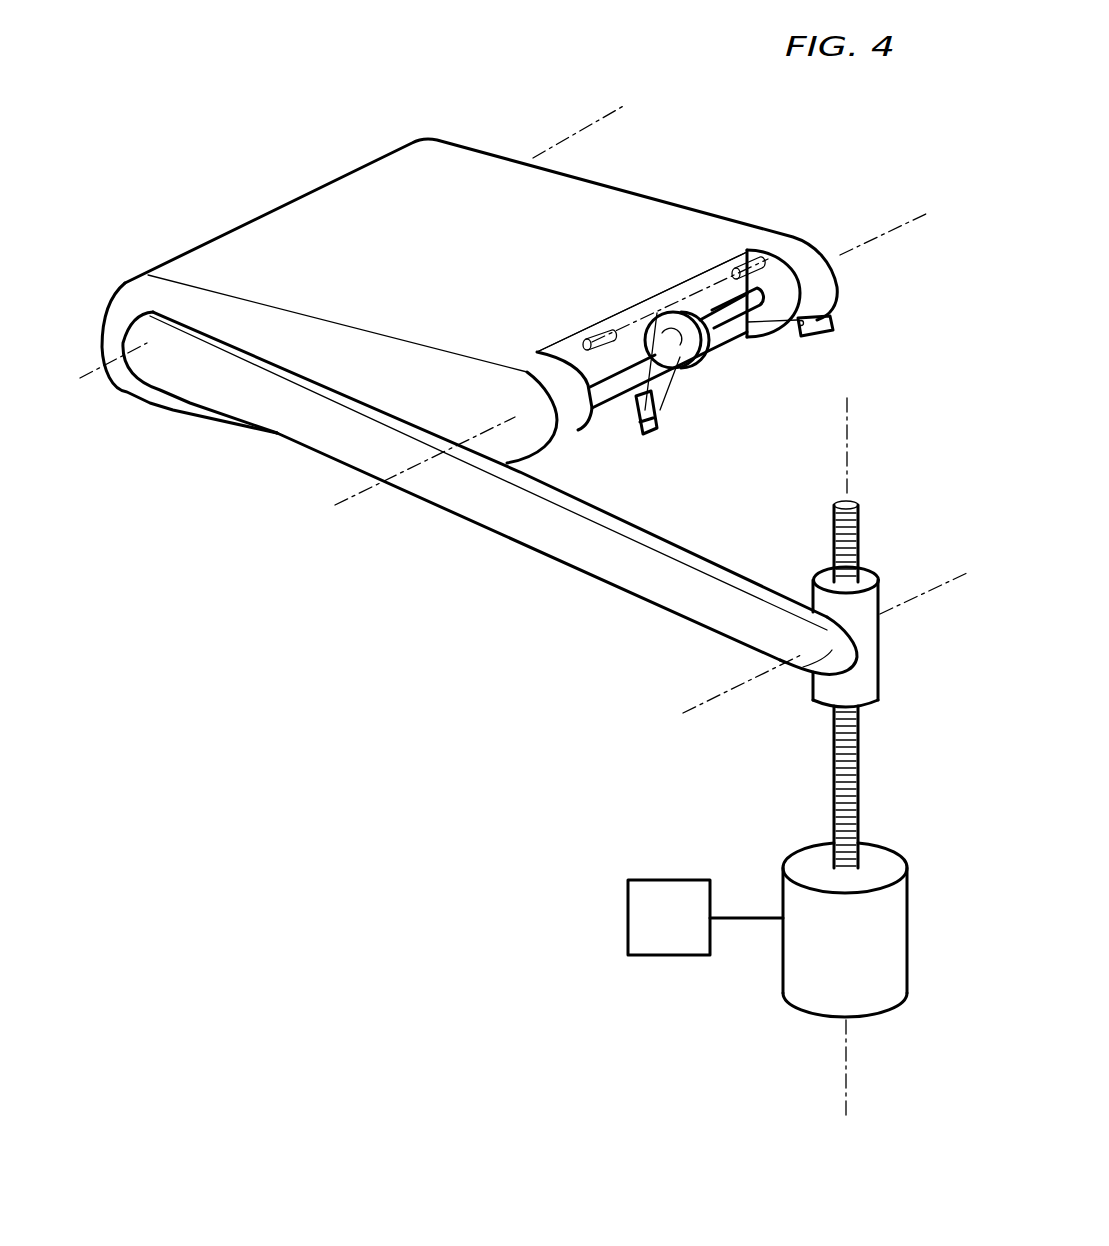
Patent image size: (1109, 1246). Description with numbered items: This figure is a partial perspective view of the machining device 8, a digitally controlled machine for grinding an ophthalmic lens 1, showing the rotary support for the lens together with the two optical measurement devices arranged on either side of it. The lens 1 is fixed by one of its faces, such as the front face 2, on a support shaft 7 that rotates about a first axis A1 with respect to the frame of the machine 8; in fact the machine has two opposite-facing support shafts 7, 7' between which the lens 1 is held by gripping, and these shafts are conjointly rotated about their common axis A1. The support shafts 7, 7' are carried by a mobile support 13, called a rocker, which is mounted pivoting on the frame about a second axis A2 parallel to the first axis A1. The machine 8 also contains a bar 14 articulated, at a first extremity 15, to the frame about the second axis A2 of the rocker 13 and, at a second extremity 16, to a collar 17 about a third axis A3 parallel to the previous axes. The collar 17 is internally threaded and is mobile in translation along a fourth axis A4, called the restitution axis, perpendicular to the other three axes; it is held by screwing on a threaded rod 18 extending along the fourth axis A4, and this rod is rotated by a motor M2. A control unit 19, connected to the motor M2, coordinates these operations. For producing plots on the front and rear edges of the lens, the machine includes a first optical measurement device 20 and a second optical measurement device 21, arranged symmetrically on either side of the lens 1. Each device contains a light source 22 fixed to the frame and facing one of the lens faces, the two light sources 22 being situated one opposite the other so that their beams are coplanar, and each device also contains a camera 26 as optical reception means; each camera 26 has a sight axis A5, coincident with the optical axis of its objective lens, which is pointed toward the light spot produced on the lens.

The ophthalmic lens 1 is at (700, 362).
The front face 2 is at (668, 368).
The support shaft 7 is at (668, 379).
The support shaft 7' is at (754, 308).
The machining device 8 is at (703, 165).
The mobile support 13 is at (285, 215).
The bar 14 is at (500, 512).
The first extremity 15 is at (112, 352).
The second extremity 16 is at (805, 670).
The collar 17 is at (868, 598).
The threaded rod 18 is at (836, 542).
The control unit 19 is at (678, 931).
The first optical measurement device 20 is at (597, 334).
The second optical measurement device 21 is at (709, 269).
The light source 22 is at (742, 273).
The camera 26 is at (634, 420).
The first axis A1 is at (888, 234).
The second axis A2 is at (590, 127).
The third axis A3 is at (712, 700).
The fourth axis A4 is at (850, 440).
The sight axis A5 is at (766, 333).
The motor M2 is at (793, 897).